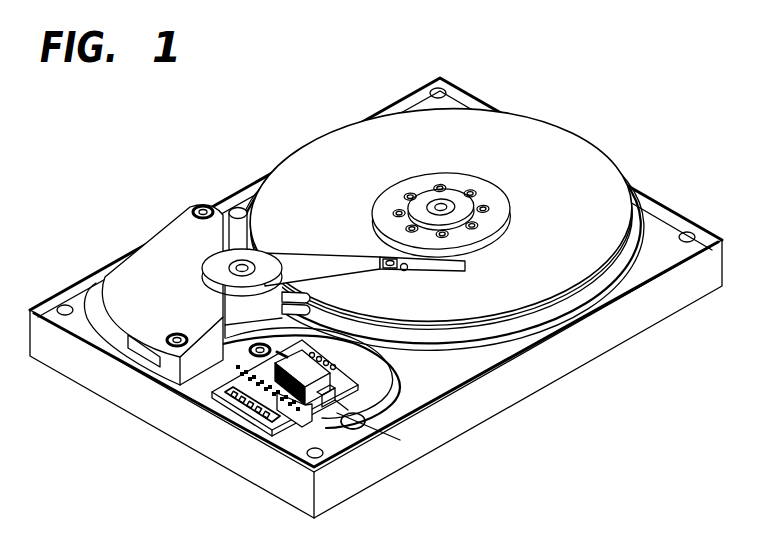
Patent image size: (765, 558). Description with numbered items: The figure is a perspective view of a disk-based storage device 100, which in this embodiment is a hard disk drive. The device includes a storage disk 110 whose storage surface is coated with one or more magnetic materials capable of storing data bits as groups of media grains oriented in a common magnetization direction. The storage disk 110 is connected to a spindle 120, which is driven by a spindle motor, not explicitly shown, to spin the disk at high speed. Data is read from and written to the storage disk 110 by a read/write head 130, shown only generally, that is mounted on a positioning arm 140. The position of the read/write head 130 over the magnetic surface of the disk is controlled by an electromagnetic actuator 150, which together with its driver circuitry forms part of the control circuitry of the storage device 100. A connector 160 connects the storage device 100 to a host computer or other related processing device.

The disk-based storage device 100 is at (148, 113).
The storage disk 110 is at (553, 148).
The spindle 120 is at (465, 207).
The read/write head 130 is at (436, 266).
The positioning arm 140 is at (302, 257).
The electromagnetic actuator 150 is at (138, 255).
The connector 160 is at (253, 393).